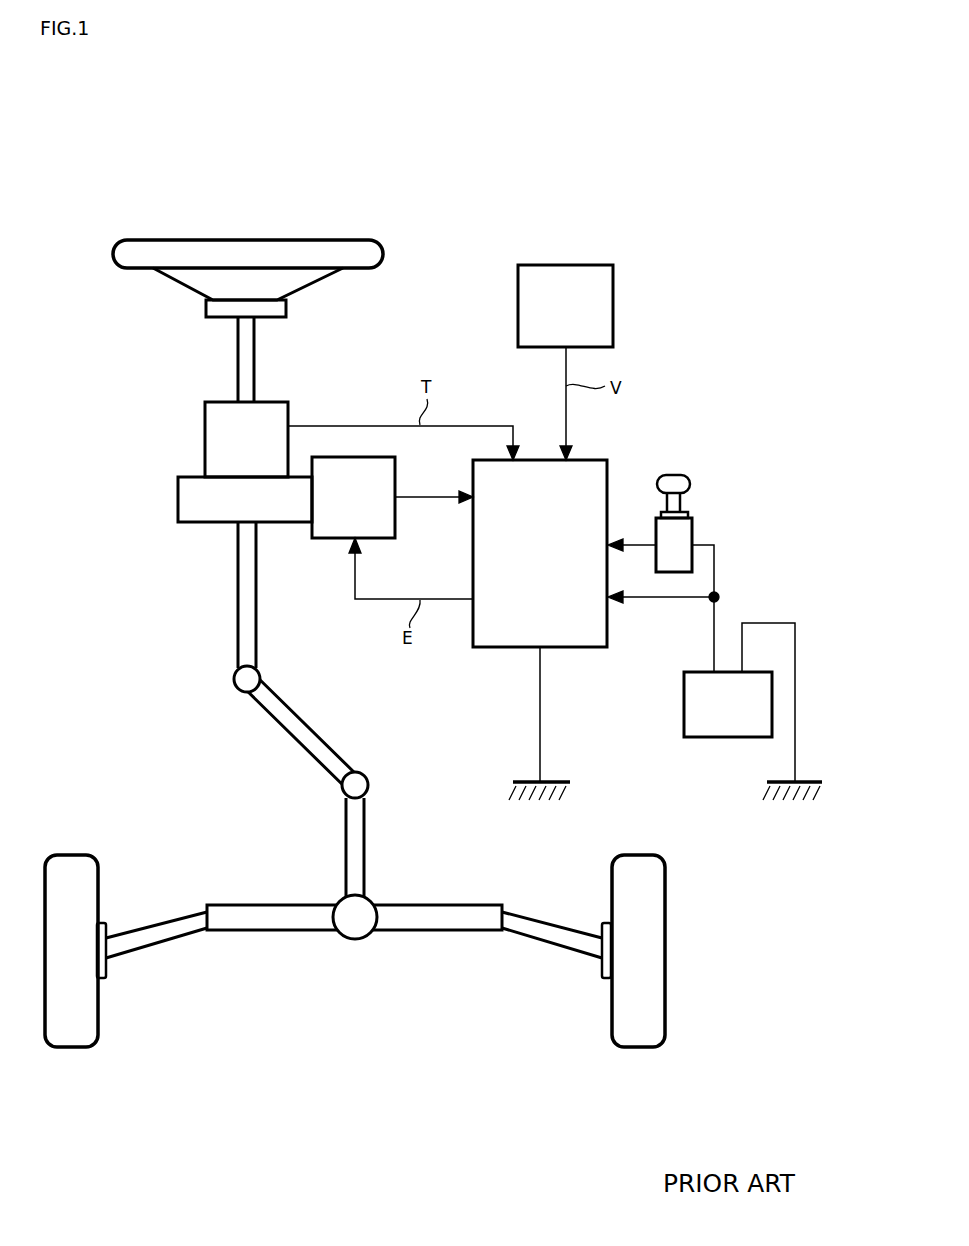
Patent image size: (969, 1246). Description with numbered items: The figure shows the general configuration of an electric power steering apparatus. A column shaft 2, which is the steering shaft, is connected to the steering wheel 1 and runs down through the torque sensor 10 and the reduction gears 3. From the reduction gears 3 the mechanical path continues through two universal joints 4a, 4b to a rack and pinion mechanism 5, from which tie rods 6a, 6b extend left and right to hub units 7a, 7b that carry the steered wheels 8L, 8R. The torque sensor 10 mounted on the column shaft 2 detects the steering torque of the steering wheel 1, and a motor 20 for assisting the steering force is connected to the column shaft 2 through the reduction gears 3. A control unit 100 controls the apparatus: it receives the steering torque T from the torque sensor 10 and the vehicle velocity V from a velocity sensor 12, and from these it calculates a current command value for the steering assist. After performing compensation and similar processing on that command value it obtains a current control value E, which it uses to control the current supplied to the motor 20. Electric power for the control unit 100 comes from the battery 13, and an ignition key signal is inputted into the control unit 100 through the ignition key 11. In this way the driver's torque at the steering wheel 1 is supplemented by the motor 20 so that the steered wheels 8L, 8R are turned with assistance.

The steering wheel 1 is at (384, 249).
The column shaft 2 is at (238, 362).
The reduction gears 3 is at (178, 505).
The universal joint 4a is at (234, 688).
The universal joint 4b is at (342, 790).
The rack and pinion mechanism 5 is at (372, 898).
The tie rod 6a is at (138, 926).
The tie rod 6b is at (532, 916).
The hub unit 7a is at (107, 972).
The hub unit 7b is at (600, 972).
The steered wheel 8L is at (97, 1036).
The steered wheel 8R is at (612, 1036).
The torque sensor 10 is at (205, 430).
The ignition key 11 is at (690, 484).
The velocity sensor 12 is at (613, 272).
The battery 13 is at (684, 697).
The motor 20 is at (395, 463).
The control unit 100 is at (608, 465).